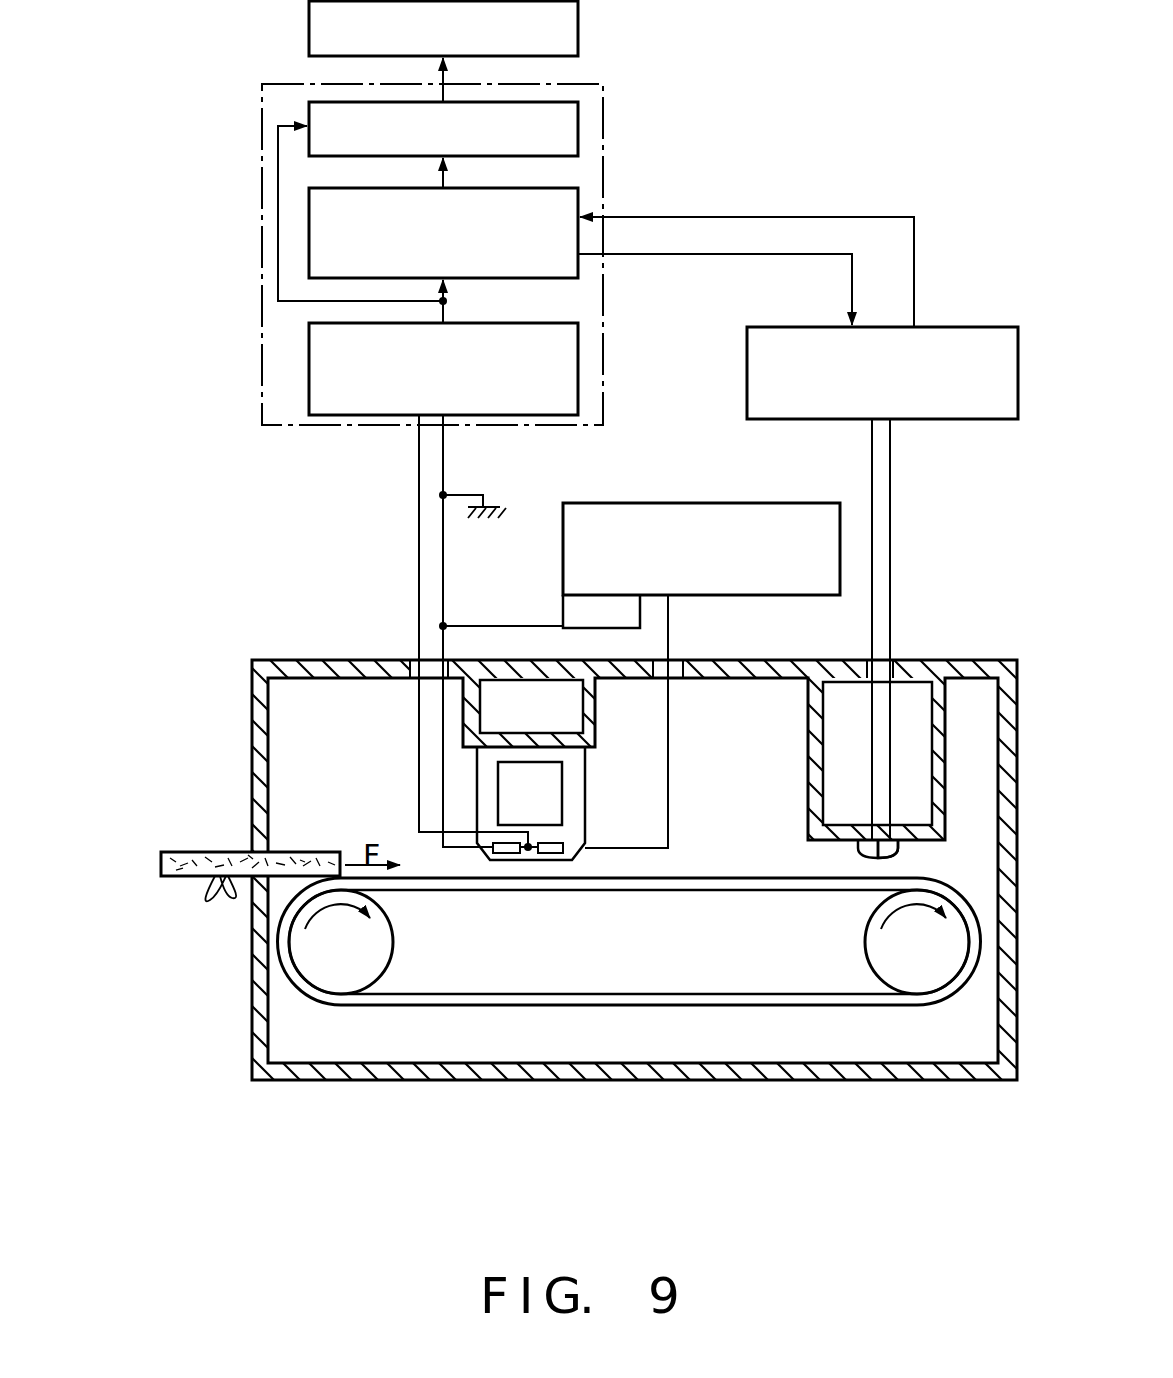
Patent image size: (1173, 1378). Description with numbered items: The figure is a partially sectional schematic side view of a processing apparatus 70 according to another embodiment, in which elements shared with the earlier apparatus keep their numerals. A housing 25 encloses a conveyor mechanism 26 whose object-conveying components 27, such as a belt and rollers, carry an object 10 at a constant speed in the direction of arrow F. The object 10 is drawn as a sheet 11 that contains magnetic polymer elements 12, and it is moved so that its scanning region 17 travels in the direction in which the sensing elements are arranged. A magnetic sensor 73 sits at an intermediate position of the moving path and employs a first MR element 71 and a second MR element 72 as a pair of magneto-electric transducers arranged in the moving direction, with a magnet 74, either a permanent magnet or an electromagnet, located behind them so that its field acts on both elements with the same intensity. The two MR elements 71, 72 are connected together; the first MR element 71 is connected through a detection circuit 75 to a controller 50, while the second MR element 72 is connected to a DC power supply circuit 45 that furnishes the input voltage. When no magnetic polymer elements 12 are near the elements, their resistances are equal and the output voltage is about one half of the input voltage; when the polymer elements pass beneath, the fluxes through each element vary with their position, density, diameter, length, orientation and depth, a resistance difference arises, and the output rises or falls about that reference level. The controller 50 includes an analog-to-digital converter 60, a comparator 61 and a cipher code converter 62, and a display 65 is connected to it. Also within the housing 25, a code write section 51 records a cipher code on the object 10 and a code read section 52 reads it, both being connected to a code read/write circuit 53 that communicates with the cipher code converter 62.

The object 10 is at (250, 834).
The sheet body 11 is at (235, 852).
The magnetic polymer elements 12 is at (209, 906).
The scanning region 17 is at (320, 852).
The housing 25 is at (1003, 660).
The conveyor mechanism 26 is at (629, 1005).
The object-conveying components 27 is at (748, 890).
The DC power supply circuit 45 is at (703, 503).
The controller 50 is at (257, 188).
The code write section 51 is at (858, 848).
The code read section 52 is at (898, 848).
The code read/write circuit 53 is at (983, 327).
The analog-to-digital converter 60 is at (548, 323).
The comparator 61 is at (578, 128).
The cipher code converter 62 is at (578, 210).
The display 65 is at (578, 30).
The processing apparatus 70 is at (970, 226).
The first MR element 71 is at (500, 860).
The second MR element 72 is at (555, 860).
The magnetic sensor 73 is at (535, 870).
The magnet 74 is at (563, 790).
The detection circuit 75 is at (399, 566).